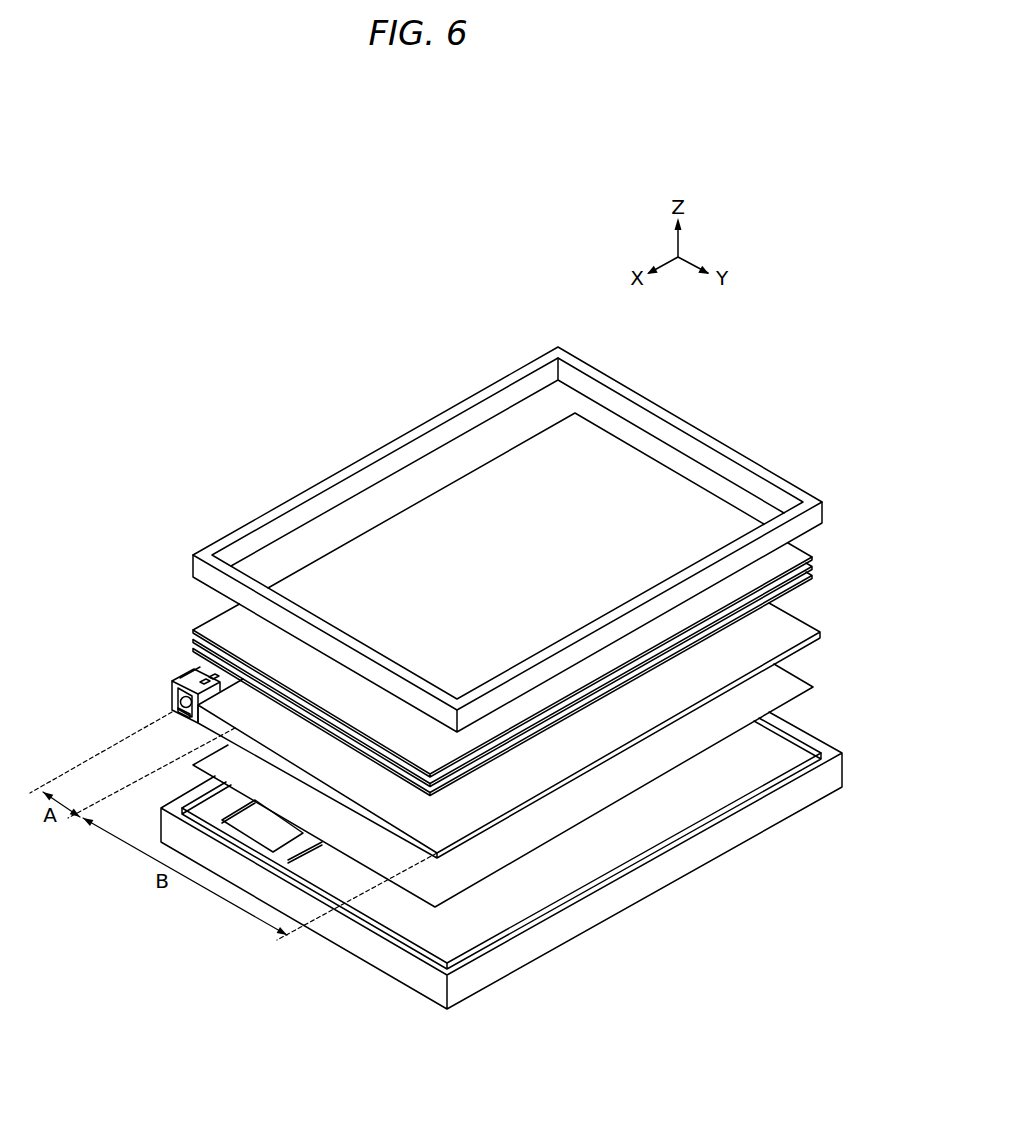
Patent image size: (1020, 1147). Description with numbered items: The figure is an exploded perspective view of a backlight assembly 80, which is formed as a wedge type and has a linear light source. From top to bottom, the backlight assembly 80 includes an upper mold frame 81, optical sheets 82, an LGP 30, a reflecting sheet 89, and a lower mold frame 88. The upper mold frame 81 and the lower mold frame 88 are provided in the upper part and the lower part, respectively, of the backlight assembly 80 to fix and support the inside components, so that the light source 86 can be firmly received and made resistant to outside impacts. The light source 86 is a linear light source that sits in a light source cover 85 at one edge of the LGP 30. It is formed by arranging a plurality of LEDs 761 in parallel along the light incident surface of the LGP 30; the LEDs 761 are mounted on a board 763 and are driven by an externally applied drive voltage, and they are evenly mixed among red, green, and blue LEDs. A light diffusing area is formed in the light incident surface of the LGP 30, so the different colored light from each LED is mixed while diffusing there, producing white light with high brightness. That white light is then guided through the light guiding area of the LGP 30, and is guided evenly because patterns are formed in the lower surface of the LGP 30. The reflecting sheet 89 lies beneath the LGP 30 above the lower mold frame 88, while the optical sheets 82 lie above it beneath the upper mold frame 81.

The backlight assembly 80 is at (483, 293).
The upper mold frame 81 is at (823, 512).
The optical sheets 82 is at (812, 553).
The LGP 30 is at (797, 613).
The reflecting sheet 89 is at (813, 687).
The lower mold frame 88 is at (842, 753).
The light source cover 85 is at (168, 677).
The LEDs 761 is at (204, 690).
The board 763 is at (168, 696).
The light source 86 is at (185, 717).